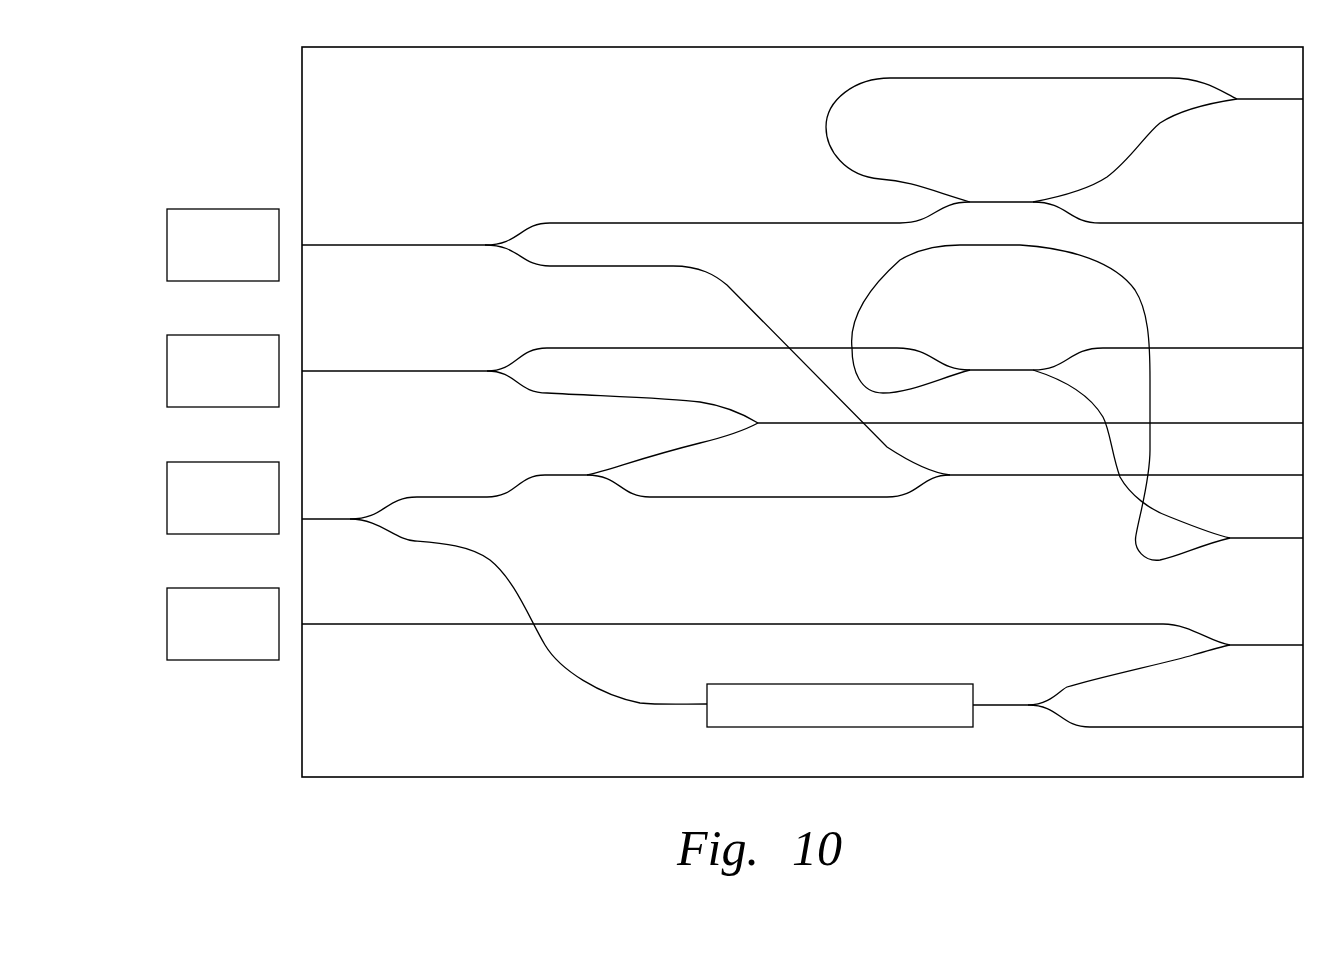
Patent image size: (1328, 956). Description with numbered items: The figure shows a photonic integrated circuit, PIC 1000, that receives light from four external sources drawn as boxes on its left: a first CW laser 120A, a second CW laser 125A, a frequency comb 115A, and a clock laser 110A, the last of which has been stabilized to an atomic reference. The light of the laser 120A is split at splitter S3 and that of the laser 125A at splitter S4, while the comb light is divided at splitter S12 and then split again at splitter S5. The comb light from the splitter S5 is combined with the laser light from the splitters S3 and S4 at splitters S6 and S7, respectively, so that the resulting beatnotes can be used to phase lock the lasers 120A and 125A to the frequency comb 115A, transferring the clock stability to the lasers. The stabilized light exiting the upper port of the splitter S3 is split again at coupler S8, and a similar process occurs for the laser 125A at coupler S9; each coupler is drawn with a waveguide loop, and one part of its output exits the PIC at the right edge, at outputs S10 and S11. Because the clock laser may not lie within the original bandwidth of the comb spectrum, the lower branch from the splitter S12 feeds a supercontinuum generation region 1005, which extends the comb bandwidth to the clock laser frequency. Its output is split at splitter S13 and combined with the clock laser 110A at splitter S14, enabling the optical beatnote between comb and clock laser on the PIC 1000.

The photonic integrated circuit 1000 is at (393, 47).
The CW laser 120A is at (266, 209).
The CW laser 125A is at (266, 335).
The frequency comb 115A is at (266, 462).
The clock laser 110A is at (266, 588).
The supercontinuum generation region 1005 is at (882, 684).
The splitter S3 is at (714, 341).
The splitter S4 is at (687, 379).
The splitter S5 is at (759, 460).
The splitter S6 is at (1126, 457).
The splitter S7 is at (1025, 404).
The coupler S8 is at (1064, 150).
The coupler S9 is at (1077, 402).
The output S10 is at (1270, 80).
The output S11 is at (1266, 520).
The optical splitter S12 is at (522, 589).
The optical splitter S13 is at (1138, 686).
The optical splitter S14 is at (1266, 627).